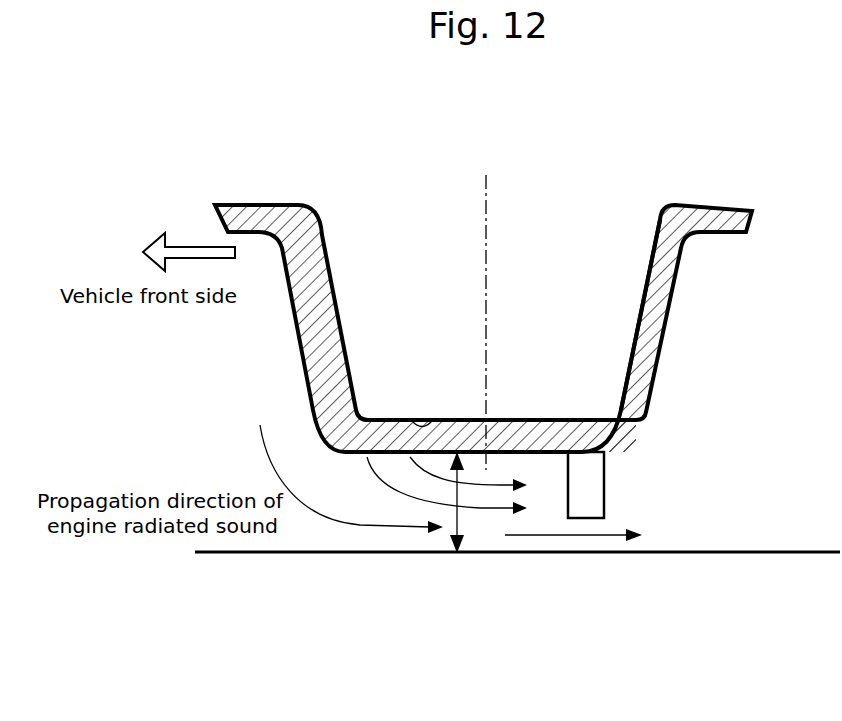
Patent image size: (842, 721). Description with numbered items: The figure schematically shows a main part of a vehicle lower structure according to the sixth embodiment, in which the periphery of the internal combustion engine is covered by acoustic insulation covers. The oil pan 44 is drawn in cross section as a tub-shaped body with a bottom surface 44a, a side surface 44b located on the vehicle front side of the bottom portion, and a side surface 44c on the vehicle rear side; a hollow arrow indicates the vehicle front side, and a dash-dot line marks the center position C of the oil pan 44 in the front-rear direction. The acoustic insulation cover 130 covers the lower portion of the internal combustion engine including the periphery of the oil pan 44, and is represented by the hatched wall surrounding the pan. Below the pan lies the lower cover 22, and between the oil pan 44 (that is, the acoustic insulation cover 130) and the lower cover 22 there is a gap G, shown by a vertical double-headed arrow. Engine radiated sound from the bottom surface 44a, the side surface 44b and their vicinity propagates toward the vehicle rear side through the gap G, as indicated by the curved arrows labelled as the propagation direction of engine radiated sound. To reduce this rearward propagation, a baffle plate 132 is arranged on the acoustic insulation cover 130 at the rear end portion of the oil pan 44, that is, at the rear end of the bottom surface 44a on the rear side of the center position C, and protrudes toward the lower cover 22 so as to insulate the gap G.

The oil pan 44 is at (603, 165).
The bottom surface 44a is at (433, 418).
The side surface 44b is at (297, 325).
The side surface 44c is at (667, 318).
The acoustic insulation cover 130 is at (657, 364).
The baffle plate 132 is at (607, 485).
The lower cover 22 is at (800, 551).
The center position C is at (486, 418).
The gap G is at (459, 523).